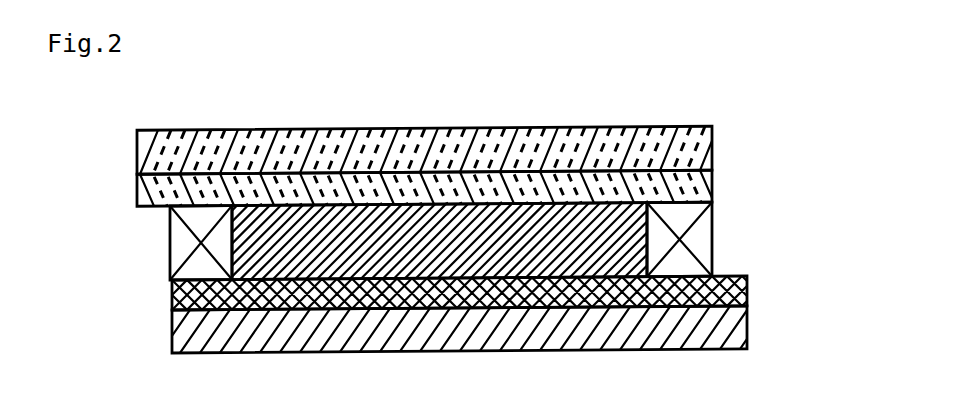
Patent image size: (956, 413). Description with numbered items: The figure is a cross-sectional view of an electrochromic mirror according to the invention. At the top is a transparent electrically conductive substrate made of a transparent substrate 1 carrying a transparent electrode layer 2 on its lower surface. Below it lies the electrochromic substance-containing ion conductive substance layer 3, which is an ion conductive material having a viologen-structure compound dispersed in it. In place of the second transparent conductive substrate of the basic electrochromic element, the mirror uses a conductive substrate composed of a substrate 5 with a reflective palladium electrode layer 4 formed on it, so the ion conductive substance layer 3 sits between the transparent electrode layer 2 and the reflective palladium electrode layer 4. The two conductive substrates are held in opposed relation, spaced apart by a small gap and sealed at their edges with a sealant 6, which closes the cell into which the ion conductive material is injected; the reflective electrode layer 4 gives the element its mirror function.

The transparent substrate 1 is at (712, 146).
The transparent electrode layer 2 is at (712, 183).
The electrochromic substance-containing ion conductive substance layer 3 is at (647, 211).
The reflective palladium electrode layer 4 is at (747, 291).
The substrate 5 is at (747, 326).
The sealant 6 is at (185, 245).